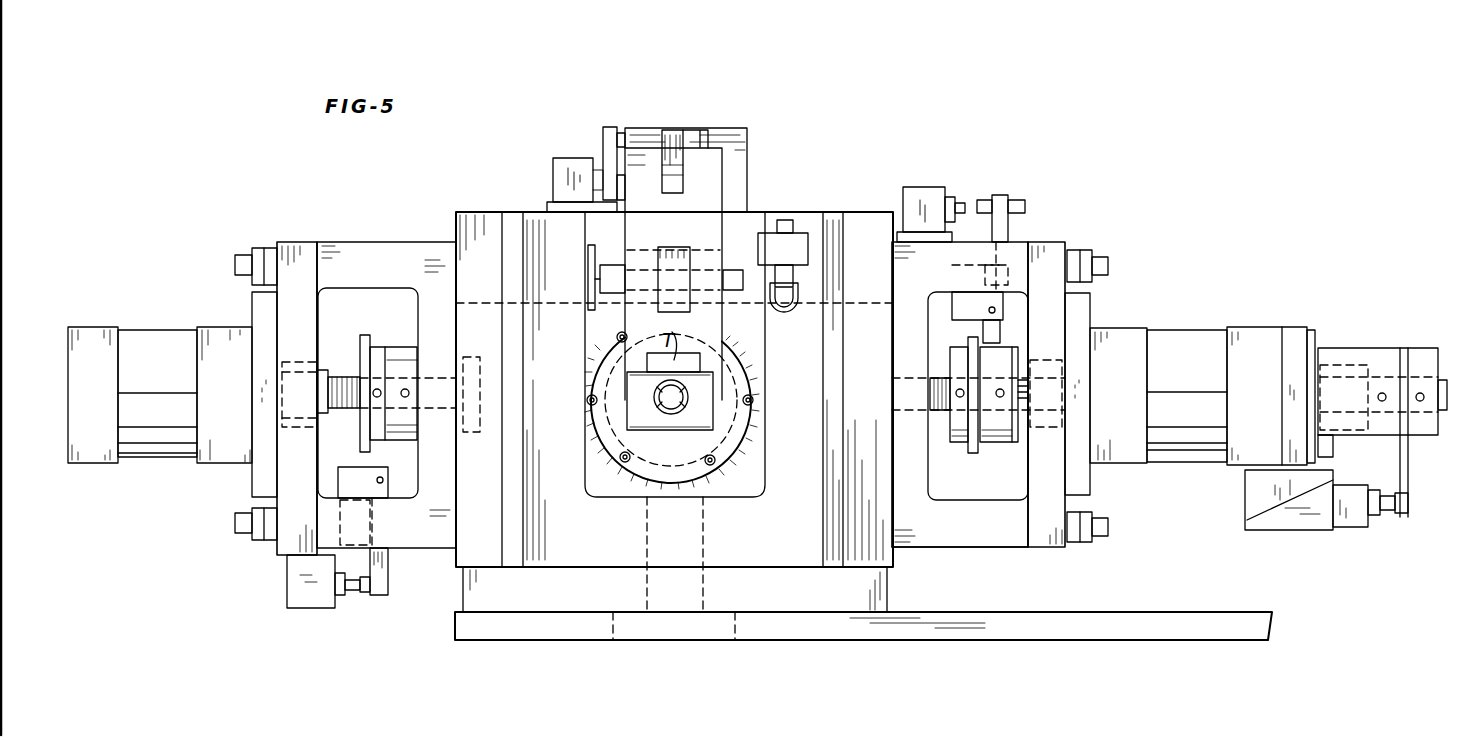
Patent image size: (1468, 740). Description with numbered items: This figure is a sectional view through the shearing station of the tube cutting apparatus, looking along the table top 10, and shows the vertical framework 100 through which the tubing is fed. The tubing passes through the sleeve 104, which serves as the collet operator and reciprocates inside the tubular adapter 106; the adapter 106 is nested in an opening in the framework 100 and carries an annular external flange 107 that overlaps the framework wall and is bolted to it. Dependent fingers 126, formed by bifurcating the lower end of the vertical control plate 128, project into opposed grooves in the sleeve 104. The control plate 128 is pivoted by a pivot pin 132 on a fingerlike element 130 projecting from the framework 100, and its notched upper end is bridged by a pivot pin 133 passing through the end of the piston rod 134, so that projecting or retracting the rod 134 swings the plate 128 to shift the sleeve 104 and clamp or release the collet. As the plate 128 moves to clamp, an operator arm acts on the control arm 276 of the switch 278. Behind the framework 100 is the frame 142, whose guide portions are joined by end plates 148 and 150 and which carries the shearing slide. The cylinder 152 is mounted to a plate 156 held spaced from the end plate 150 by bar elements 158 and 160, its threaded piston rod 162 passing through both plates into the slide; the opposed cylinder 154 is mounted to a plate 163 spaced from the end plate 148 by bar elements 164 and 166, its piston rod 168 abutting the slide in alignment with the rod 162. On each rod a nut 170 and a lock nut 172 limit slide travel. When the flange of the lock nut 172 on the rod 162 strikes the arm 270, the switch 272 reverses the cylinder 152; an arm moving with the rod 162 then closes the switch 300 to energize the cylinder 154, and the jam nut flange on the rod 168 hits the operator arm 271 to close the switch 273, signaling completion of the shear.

The table top 10 is at (1030, 620).
The vertical framework 100 is at (580, 528).
The sleeve 104 is at (628, 398).
The adapter 106 is at (611, 415).
The flange 107 is at (745, 357).
The dependent fingers 126 is at (627, 360).
The control plate 128 is at (622, 240).
The fingerlike element 130 is at (655, 270).
The pivot pin 132 is at (755, 250).
The pivot pin 133 is at (702, 160).
The piston rod 134 is at (672, 128).
The frame 142 is at (812, 203).
The end plate 148 is at (430, 330).
The end plate 150 is at (897, 336).
The cylinder 152 is at (1176, 381).
The cylinder 154 is at (157, 437).
The plate 156 is at (1032, 290).
The bar element 158 is at (1015, 246).
The bar element 160 is at (960, 534).
The piston rod 162 is at (1028, 412).
The plate 163 is at (290, 305).
The bar element 164 is at (365, 242).
The bar element 166 is at (428, 548).
The piston rod 168 is at (344, 410).
The nut 170 is at (410, 350).
The lock nut 172 is at (372, 337).
The arm 270 is at (1000, 194).
The operator arm 271 is at (385, 475).
The switch 272 is at (927, 192).
The switch 273 is at (300, 578).
The control arm 276 is at (626, 128).
The switch 278 is at (568, 165).
The switch 300 is at (1282, 522).